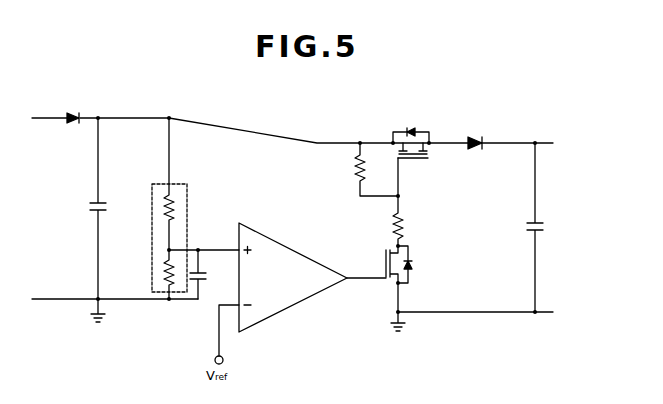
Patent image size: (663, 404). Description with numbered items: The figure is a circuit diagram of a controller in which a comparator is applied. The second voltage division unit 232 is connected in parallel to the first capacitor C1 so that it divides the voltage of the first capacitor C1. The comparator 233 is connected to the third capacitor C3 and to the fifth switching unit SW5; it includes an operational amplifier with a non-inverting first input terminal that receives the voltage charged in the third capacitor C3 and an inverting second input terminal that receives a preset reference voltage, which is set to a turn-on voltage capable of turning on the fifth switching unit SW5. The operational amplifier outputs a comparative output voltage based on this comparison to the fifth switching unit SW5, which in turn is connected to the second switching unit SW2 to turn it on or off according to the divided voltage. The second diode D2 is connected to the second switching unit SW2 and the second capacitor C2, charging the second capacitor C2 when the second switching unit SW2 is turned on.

The second voltage division unit 232 is at (187, 190).
The comparator 233 is at (282, 242).
The first capacitor C1 is at (109, 208).
The second capacitor C2 is at (544, 227).
The third capacitor C3 is at (204, 274).
The second switching unit SW2 is at (411, 134).
The fifth switching unit SW5 is at (416, 264).
The second diode D2 is at (476, 135).